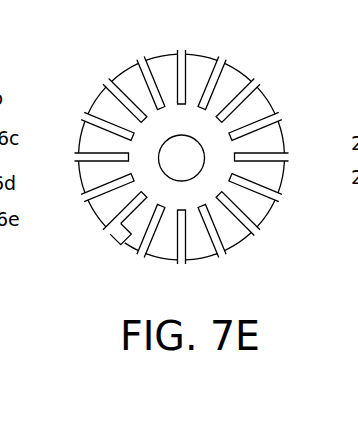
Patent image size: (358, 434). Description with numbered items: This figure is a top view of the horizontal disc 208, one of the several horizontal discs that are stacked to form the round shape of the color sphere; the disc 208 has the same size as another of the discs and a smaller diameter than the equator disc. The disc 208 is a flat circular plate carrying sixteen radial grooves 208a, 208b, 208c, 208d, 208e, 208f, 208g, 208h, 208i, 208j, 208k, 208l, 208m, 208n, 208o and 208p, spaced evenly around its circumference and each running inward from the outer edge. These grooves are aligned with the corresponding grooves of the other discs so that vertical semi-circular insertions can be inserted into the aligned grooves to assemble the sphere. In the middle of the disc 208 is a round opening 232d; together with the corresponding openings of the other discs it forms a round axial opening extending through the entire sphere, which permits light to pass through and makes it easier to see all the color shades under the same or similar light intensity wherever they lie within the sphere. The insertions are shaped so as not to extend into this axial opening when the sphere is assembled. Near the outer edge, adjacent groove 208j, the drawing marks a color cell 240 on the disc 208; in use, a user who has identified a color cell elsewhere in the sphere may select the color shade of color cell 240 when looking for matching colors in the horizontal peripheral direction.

The horizontal disc 208 is at (200, 35).
The groove 208a is at (219, 62).
The groove 208b is at (253, 84).
The groove 208c is at (278, 118).
The groove 208d is at (285, 158).
The groove 208e is at (279, 198).
The groove 208f is at (255, 231).
The groove 208g is at (221, 254).
The groove 208h is at (184, 264).
The groove 208i is at (146, 254).
The groove 208j is at (110, 236).
The groove 208k is at (86, 197).
The groove 208l is at (78, 157).
The groove 208m is at (86, 116).
The groove 208n is at (110, 86).
The groove 208o is at (140, 62).
The groove 208p is at (174, 52).
The round opening 232d is at (178, 180).
The color cell 240 is at (120, 246).